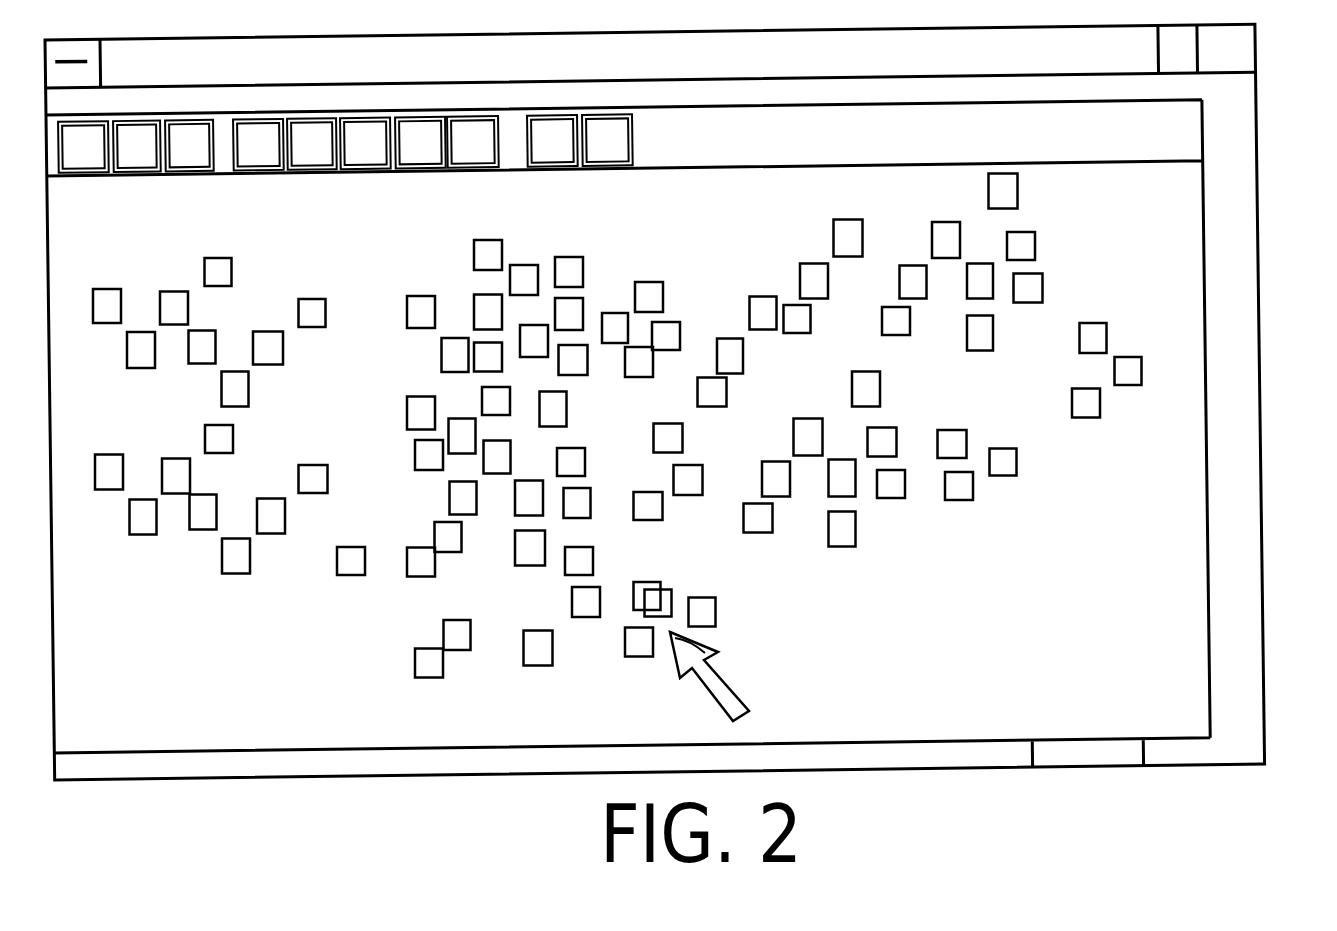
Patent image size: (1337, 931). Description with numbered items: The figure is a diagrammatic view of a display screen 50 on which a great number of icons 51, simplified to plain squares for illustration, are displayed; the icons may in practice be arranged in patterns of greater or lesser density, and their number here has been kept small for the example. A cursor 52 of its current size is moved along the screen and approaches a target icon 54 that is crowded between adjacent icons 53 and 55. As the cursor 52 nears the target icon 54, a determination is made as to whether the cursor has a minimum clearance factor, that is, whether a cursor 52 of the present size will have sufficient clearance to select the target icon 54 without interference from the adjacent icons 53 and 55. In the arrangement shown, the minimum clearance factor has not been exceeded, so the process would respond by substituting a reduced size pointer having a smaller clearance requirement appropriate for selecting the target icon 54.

The display screen 50 is at (1167, 240).
The icons 51 is at (574, 271).
The cursor 52 is at (712, 650).
The adjacent icon 53 is at (642, 590).
The target icon 54 is at (665, 598).
The adjacent icon 55 is at (634, 647).